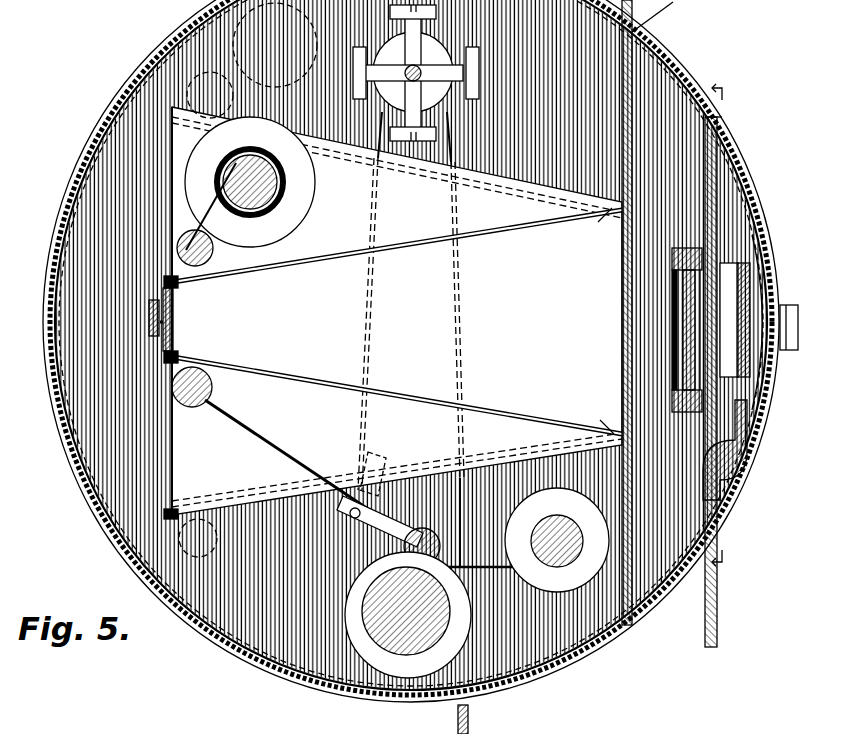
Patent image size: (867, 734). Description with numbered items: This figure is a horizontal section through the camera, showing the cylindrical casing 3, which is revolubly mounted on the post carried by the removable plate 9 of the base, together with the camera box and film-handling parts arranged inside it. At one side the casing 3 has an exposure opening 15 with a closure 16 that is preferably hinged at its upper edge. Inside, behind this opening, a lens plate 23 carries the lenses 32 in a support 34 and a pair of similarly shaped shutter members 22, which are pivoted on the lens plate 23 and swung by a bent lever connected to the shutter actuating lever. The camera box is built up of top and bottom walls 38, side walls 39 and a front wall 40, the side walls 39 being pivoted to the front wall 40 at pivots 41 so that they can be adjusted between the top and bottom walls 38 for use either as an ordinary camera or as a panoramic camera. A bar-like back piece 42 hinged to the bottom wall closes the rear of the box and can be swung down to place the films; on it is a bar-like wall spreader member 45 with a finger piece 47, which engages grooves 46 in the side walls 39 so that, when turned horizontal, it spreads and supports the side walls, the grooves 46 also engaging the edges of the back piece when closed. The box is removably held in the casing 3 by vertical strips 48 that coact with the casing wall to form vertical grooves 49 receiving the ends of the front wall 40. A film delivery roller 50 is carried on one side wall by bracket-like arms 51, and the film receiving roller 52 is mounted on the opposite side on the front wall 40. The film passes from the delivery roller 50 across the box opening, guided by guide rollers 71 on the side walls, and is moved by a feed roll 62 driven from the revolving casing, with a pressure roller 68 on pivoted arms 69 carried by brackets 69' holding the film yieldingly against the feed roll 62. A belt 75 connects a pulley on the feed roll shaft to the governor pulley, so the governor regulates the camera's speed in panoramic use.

The casing 3 is at (470, 718).
The removable plate 9 is at (725, 327).
The exposure opening 15 is at (766, 290).
The closure 16 is at (781, 308).
The shutter members 22 is at (752, 272).
The lens plate 23 is at (703, 432).
The lenses 32 is at (672, 280).
The lens support 34 is at (735, 205).
The top and bottom walls 38 is at (176, 468).
The side walls 39 is at (336, 267).
The front wall 40 is at (632, 83).
The pivots 41 is at (604, 216).
The back piece 42 is at (175, 300).
The wall spreader member 45 is at (175, 322).
The grooves 46 is at (164, 282).
The finger piece 47 is at (149, 318).
The vertical strips 48 is at (607, 627).
The vertical grooves 49 is at (623, 617).
The film delivery roller 50 is at (284, 184).
The bracket-like arms 51 is at (292, 248).
The film receiving roller 52 is at (562, 567).
The feed roll 62 is at (393, 630).
The pressure roller 68 is at (406, 550).
The pivoted arms 69 is at (346, 486).
The brackets 69' is at (387, 496).
The guide rollers 71 is at (212, 262).
The belt 75 is at (452, 155).